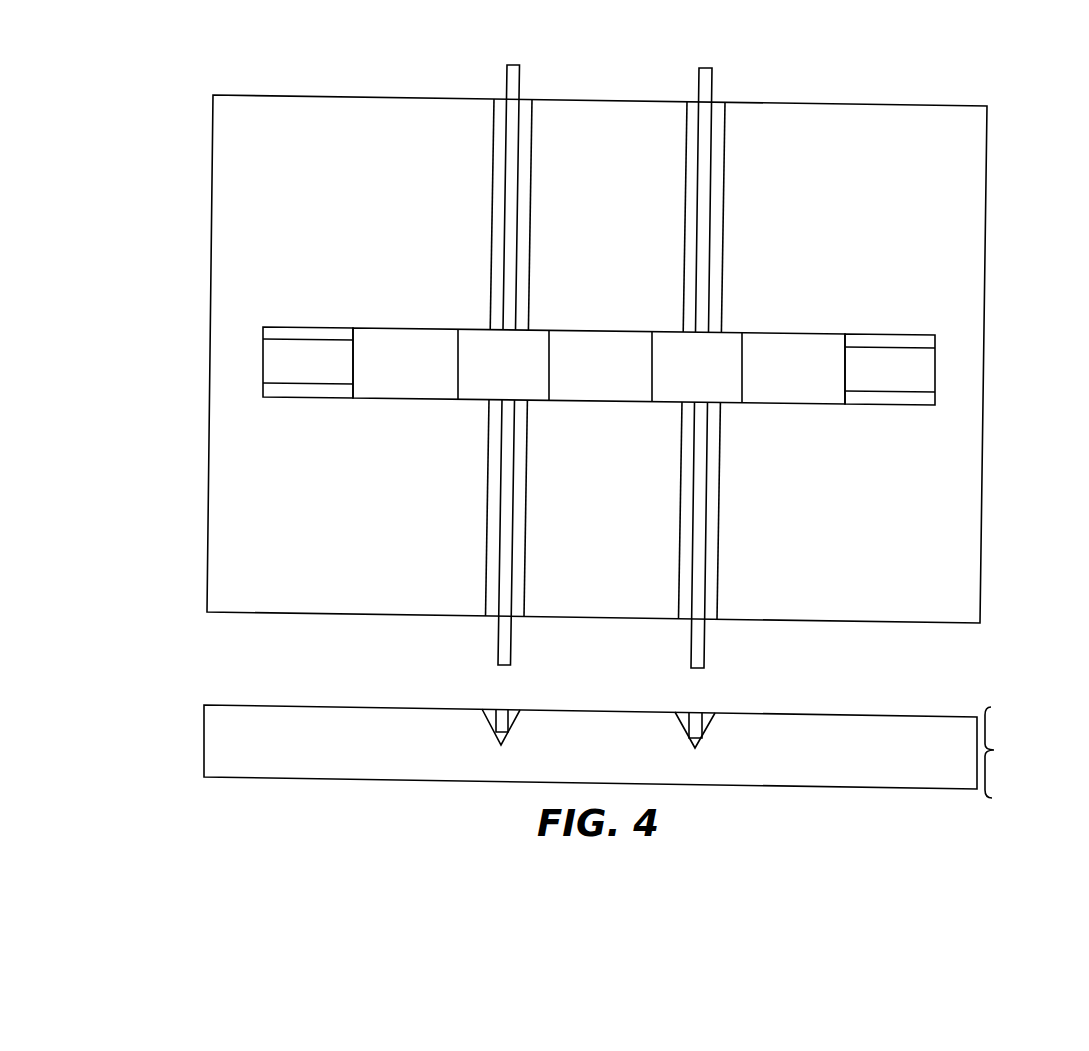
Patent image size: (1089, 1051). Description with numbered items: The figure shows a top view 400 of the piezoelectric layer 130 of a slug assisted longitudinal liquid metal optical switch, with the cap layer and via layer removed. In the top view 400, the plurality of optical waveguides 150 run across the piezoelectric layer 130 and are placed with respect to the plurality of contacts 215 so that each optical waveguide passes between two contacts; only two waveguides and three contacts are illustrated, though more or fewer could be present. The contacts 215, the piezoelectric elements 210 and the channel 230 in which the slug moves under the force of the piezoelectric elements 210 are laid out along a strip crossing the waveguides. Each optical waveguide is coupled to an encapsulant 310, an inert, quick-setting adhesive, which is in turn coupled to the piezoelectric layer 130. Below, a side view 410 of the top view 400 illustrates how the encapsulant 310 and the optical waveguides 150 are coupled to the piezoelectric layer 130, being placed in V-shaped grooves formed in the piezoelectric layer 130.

The top view 400 is at (221, 76).
The piezoelectric layer 130 is at (218, 490).
The plurality of optical waveguides 150 is at (507, 91).
The encapsulant 310 is at (498, 152).
The piezoelectric elements 210 is at (340, 353).
The plurality of contacts 215 is at (409, 335).
The channel 230 is at (282, 333).
The side view 410 is at (1013, 752).